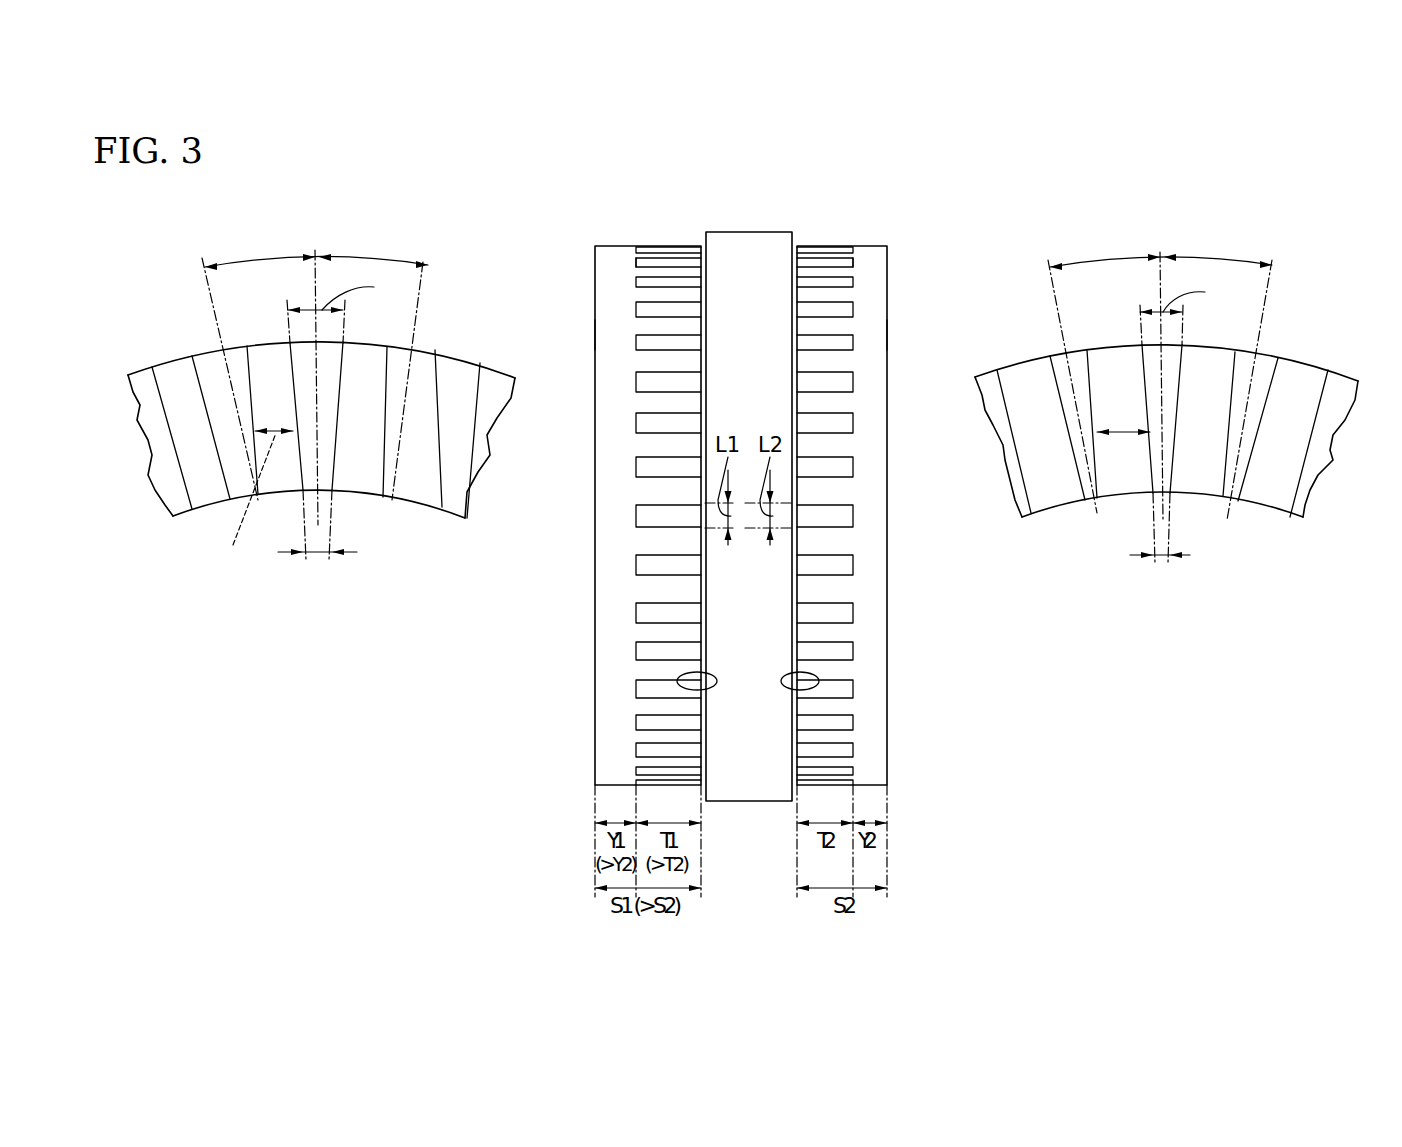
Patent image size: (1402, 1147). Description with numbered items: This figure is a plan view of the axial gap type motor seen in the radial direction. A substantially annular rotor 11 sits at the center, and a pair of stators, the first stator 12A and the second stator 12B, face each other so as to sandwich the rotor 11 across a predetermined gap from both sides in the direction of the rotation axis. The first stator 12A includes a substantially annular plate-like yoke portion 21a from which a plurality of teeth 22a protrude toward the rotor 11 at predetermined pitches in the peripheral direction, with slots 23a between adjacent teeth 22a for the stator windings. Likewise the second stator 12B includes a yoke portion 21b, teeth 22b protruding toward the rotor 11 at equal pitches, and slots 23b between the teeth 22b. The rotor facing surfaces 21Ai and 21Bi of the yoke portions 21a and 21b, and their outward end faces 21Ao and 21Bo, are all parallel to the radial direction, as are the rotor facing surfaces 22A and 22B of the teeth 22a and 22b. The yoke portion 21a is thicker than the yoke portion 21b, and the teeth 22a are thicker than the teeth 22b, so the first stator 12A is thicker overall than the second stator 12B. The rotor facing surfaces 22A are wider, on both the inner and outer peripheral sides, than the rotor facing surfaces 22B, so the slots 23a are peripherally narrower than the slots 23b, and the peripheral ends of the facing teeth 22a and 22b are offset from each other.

The rotor 11 is at (750, 229).
The first stator 12A is at (604, 243).
The second stator 12B is at (875, 243).
The yoke portion 21a is at (612, 740).
The yoke portion 21b is at (880, 740).
The rotor facing surface 21Ai is at (648, 313).
The end face 21Ao is at (597, 337).
The rotor facing surface 21Bi is at (845, 315).
The end face 21Bo is at (888, 337).
The teeth 22a is at (652, 587).
The teeth 22b is at (840, 585).
The rotor facing surfaces 22A is at (678, 677).
The rotor facing surface 22B is at (818, 678).
The slots 23a is at (655, 515).
The slots 23b is at (835, 515).